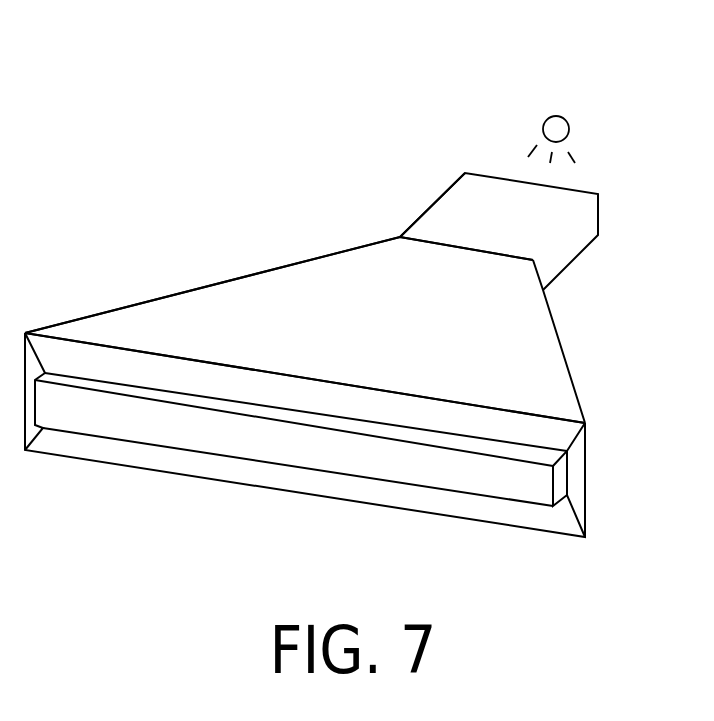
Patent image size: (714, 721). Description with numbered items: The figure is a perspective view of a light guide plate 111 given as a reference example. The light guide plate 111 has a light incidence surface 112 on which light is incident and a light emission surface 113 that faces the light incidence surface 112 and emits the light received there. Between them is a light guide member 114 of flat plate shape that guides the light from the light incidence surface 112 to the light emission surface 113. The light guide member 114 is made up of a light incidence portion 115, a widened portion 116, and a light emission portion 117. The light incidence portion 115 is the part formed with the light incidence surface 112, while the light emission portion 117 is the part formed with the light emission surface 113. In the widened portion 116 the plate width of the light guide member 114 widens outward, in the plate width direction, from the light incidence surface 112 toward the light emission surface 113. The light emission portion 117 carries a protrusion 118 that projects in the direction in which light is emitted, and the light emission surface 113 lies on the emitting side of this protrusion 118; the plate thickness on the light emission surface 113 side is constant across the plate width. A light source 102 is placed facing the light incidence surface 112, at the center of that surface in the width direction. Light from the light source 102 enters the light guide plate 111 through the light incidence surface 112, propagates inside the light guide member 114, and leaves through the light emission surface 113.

The light source 102 is at (558, 117).
The light guide plate 111 is at (122, 190).
The light incidence surface 112 is at (485, 176).
The light emission surface 113 is at (160, 423).
The light guide member 114 is at (108, 312).
The light incidence portion 115 is at (435, 212).
The widened portion 116 is at (257, 293).
The light emission portion 117 is at (568, 462).
The protrusion 118 is at (567, 488).